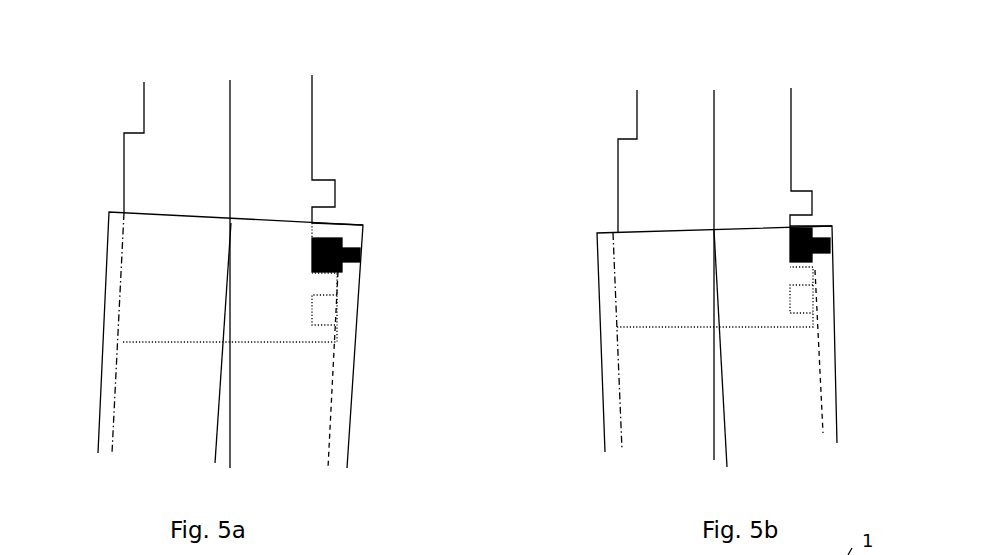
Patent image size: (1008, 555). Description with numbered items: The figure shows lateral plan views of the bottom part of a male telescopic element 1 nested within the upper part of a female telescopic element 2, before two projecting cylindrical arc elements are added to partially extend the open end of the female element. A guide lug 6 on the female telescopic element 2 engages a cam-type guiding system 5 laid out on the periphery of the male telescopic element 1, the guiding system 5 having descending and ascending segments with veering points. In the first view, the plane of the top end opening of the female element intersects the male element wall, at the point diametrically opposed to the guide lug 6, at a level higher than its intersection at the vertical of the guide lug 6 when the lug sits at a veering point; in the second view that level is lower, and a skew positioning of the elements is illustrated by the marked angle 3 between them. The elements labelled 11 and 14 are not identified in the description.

In FIG. 5B, the male telescopic element 1 is at (800, 103).
In FIG. 5A, the female telescopic element 2 is at (370, 383).
In FIG. 5B, the female telescopic element 2 is at (590, 384).
In FIG. 5A, the marked angle 3 is at (243, 415).
In FIG. 5B, the marked angle 3 is at (687, 424).
In FIG. 5A, the guiding system 5 is at (339, 211).
In FIG. 5B, the guiding system 5 is at (819, 215).
In FIG. 5A, the guide lug 6 is at (376, 228).
In FIG. 5B, the guide lug 6 is at (842, 223).
In FIG. 5A, the rim flange 11 is at (322, 101).
In FIG. 5A, the rim wall 14 is at (111, 154).
In FIG. 5B, the rim wall 14 is at (606, 169).